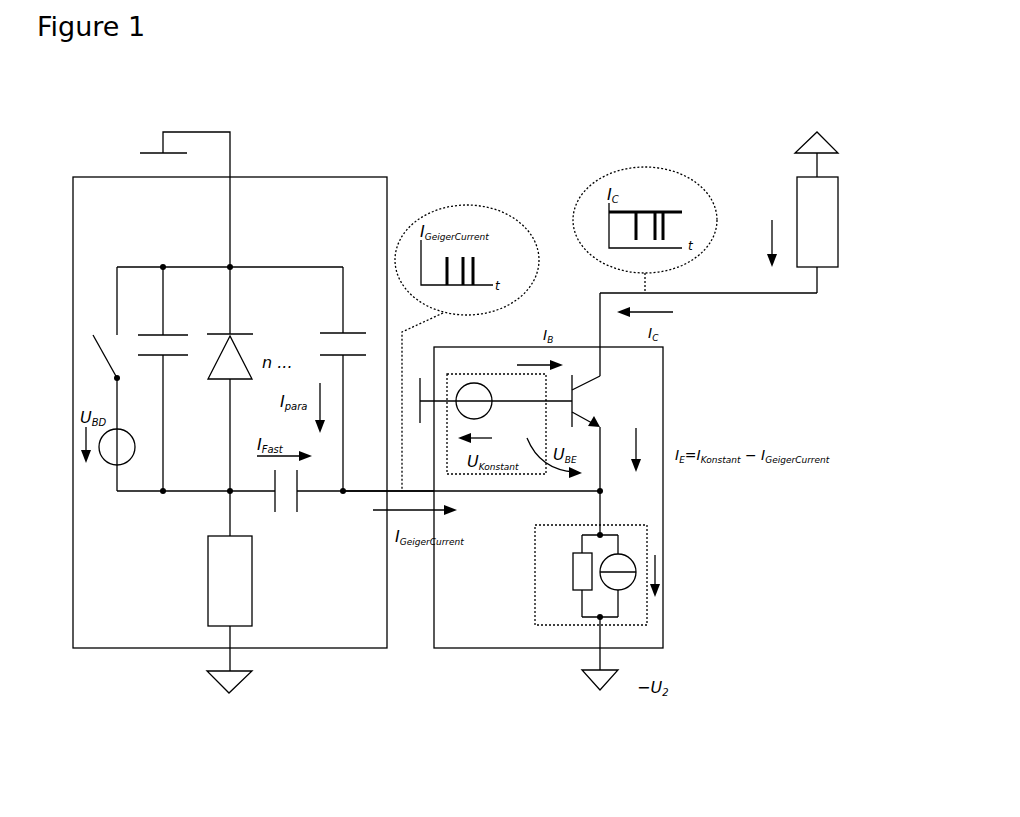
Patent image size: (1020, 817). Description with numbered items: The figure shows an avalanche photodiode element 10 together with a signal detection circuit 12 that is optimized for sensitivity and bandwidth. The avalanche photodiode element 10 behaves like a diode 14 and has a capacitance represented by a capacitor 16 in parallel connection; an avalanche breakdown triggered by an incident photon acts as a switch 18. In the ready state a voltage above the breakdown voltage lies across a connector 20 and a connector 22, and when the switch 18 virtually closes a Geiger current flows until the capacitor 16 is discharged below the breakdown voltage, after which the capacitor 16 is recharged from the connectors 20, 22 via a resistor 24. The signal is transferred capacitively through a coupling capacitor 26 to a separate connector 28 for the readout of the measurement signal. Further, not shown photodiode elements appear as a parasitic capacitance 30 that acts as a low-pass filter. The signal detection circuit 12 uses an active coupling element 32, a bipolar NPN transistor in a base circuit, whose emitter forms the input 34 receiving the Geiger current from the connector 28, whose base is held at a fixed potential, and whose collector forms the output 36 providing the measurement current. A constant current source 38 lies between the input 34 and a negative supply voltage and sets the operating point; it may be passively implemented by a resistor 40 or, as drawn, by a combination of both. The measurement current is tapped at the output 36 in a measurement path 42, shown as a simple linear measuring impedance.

The avalanche photodiode element 10 is at (230, 345).
The signal detection circuit 12 is at (548, 345).
The diode 14 is at (247, 391).
The capacitor 16 is at (161, 348).
The switch 18 is at (63, 370).
The connector 20 is at (220, 140).
The connector 22 is at (278, 662).
The resistor 24 is at (211, 558).
The coupling capacitor 26 is at (310, 533).
The connector 28 is at (388, 568).
The parasitic capacitance 30 is at (352, 355).
The active coupling element 32 is at (646, 404).
The input 34 is at (628, 476).
The output 36 is at (562, 334).
The constant current source 38 is at (636, 558).
The resistor 40 is at (542, 571).
The measurement path 42 is at (828, 212).